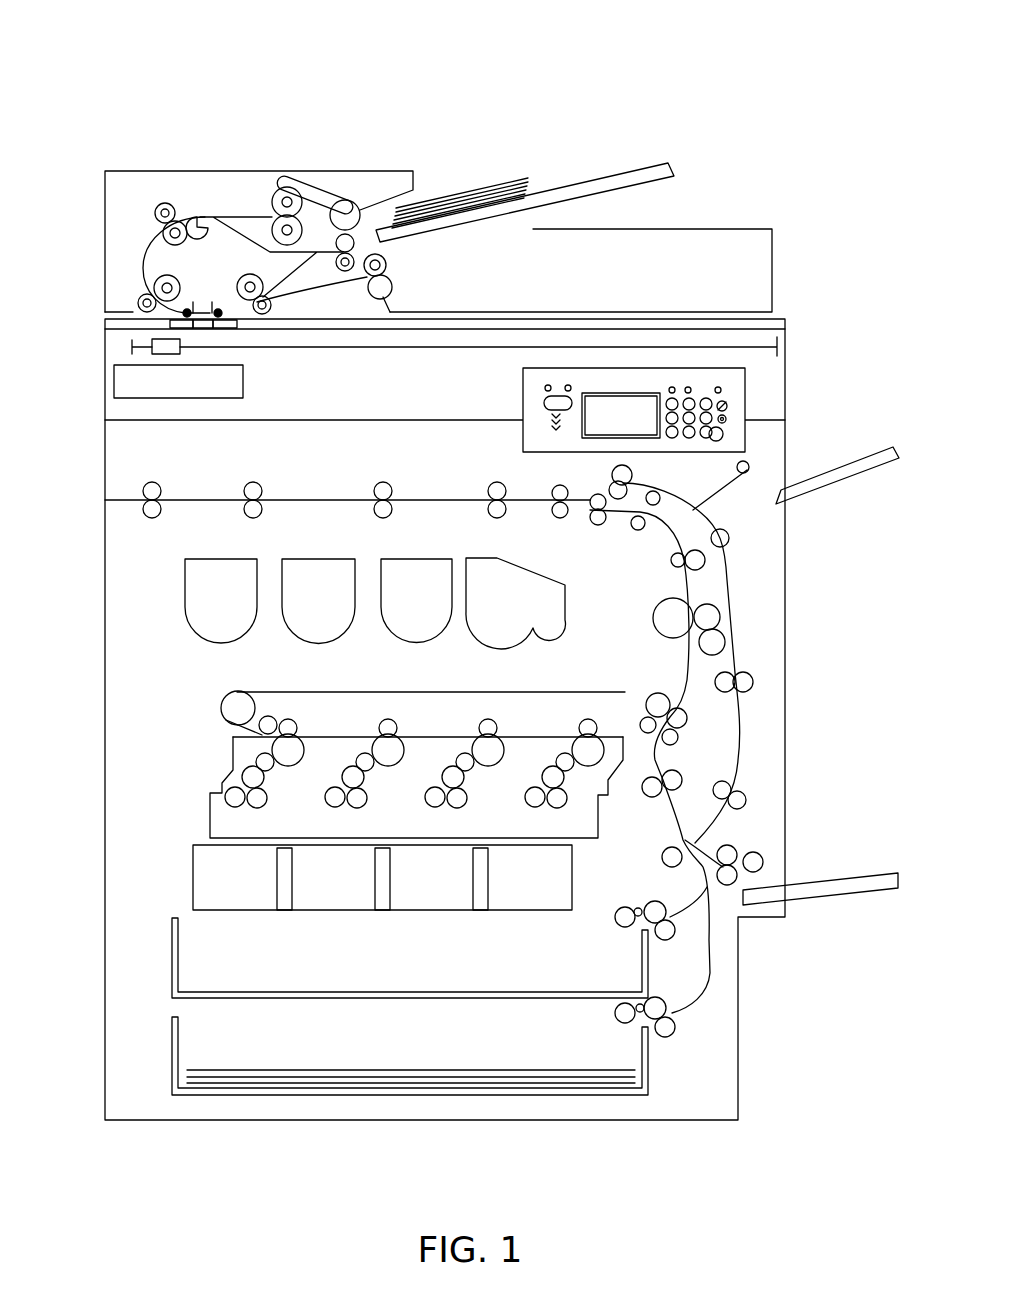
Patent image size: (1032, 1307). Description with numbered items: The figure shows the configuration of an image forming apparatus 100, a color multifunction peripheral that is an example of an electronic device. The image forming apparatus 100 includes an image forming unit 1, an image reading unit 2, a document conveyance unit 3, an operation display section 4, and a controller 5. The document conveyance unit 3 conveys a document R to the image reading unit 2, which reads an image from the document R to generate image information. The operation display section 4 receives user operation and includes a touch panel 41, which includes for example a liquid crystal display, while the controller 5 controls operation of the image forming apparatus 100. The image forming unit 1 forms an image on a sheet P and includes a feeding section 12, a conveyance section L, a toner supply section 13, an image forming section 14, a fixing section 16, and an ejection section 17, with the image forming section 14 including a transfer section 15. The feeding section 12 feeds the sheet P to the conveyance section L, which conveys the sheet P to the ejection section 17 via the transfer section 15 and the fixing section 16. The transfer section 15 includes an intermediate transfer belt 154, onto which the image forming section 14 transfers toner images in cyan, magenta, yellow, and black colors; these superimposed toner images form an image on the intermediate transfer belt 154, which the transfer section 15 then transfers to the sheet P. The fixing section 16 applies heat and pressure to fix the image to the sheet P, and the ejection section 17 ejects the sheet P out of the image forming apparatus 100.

The image forming apparatus 100 is at (685, 95).
The image forming unit 1 is at (825, 572).
The image reading unit 2 is at (795, 355).
The document conveyance unit 3 is at (792, 278).
The document R is at (505, 185).
The operation display section 4 is at (745, 400).
The touch panel 41 is at (610, 392).
The controller 5 is at (245, 383).
The ejection section 17 is at (133, 481).
The conveyance section L is at (300, 492).
The fixing section 16 is at (660, 595).
The toner supply section 13 is at (155, 600).
The transfer section 15 is at (370, 689).
The intermediate transfer belt 154 is at (380, 692).
The image forming section 14 is at (160, 808).
The feeding section 12 is at (160, 1042).
The sheet P is at (285, 1083).